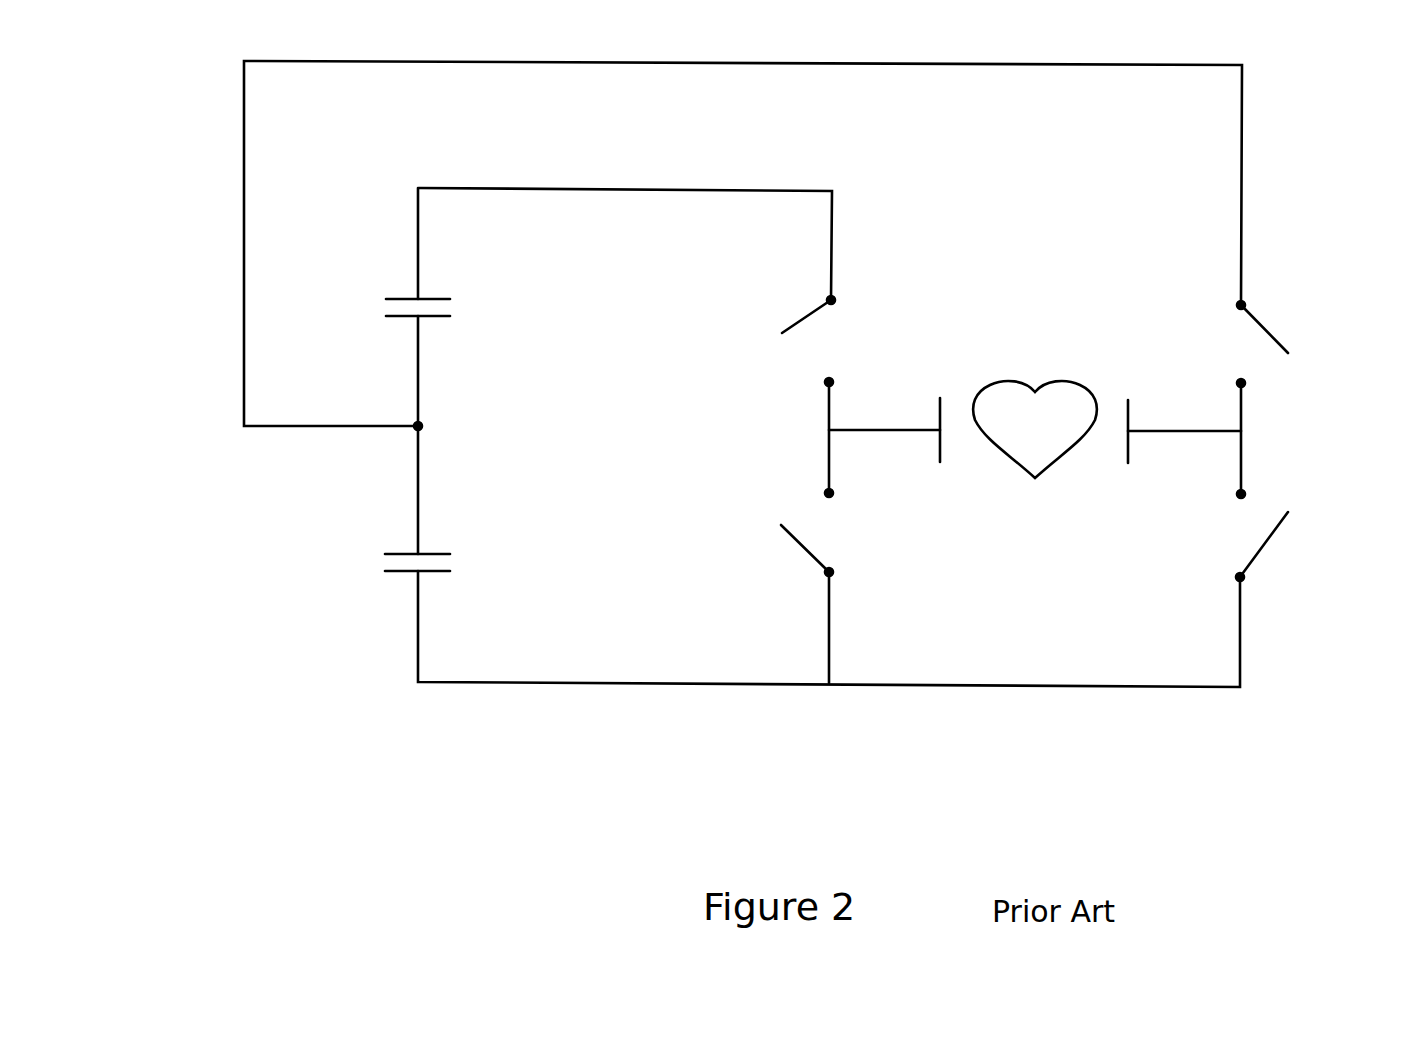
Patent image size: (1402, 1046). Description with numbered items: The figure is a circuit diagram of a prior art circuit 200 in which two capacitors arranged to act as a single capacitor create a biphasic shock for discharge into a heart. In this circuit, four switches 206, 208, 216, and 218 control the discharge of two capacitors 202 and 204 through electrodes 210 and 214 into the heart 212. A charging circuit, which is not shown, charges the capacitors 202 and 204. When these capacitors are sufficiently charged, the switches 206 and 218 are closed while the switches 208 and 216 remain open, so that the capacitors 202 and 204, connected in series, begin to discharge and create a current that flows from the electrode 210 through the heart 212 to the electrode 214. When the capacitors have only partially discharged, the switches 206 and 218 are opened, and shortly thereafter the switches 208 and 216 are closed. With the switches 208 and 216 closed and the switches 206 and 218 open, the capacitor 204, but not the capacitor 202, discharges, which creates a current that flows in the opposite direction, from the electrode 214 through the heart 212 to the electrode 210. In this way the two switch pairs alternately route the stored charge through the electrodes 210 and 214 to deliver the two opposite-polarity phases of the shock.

The prior art defibrillator circuit 200 is at (168, 148).
The capacitor 202 is at (433, 298).
The capacitor 204 is at (432, 554).
The switch 206 is at (817, 313).
The switch 208 is at (815, 553).
The electrode 210 is at (940, 413).
The heart 212 is at (1053, 398).
The electrode 214 is at (1130, 413).
The switch 216 is at (1273, 332).
The switch 218 is at (1258, 552).